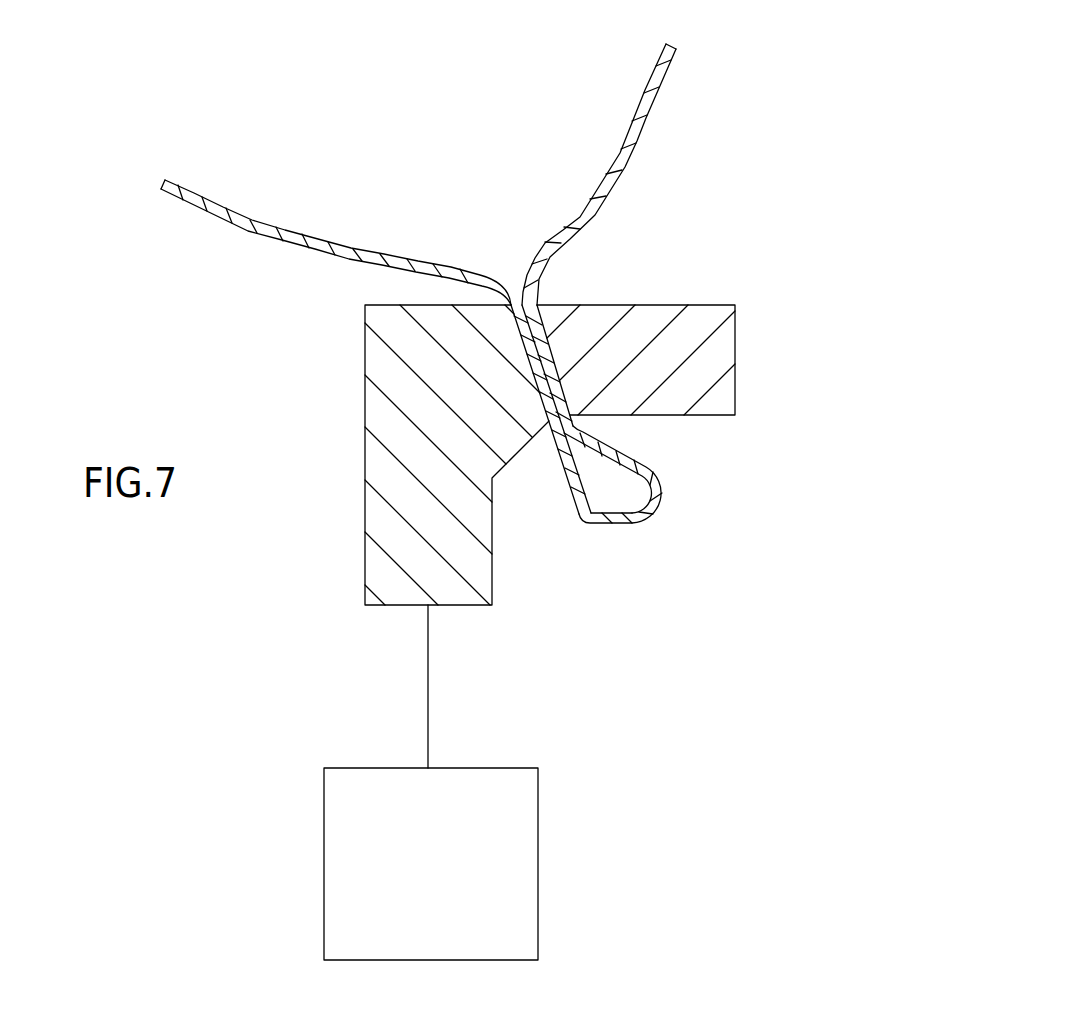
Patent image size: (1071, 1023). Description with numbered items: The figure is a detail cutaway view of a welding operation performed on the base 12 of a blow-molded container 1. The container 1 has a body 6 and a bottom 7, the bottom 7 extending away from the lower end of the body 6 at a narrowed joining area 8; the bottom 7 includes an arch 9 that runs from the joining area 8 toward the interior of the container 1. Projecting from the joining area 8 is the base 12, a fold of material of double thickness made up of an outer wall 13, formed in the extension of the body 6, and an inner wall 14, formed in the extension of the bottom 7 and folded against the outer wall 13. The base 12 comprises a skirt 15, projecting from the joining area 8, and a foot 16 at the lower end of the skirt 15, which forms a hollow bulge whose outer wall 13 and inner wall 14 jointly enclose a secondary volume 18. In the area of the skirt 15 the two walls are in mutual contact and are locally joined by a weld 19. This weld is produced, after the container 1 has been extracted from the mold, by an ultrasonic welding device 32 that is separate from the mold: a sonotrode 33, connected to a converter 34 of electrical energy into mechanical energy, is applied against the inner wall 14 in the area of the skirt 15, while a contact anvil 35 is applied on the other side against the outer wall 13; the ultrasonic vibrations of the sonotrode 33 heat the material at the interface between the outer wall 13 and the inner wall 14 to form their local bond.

The container 1 is at (447, 302).
The body 6 is at (620, 302).
The bottom 7 is at (376, 347).
The arch 9 is at (376, 347).
The joining area 8 is at (538, 273).
The base 12 is at (620, 493).
The outer wall 13 is at (546, 360).
The inner wall 14 is at (535, 372).
The skirt 15 is at (563, 392).
The foot 16 is at (661, 477).
The secondary volume 18 is at (617, 495).
The weld 19 is at (529, 341).
The welding device 32 is at (489, 518).
The sonotrode 33 is at (387, 418).
The converter 34 is at (324, 826).
The contact anvil 35 is at (652, 316).